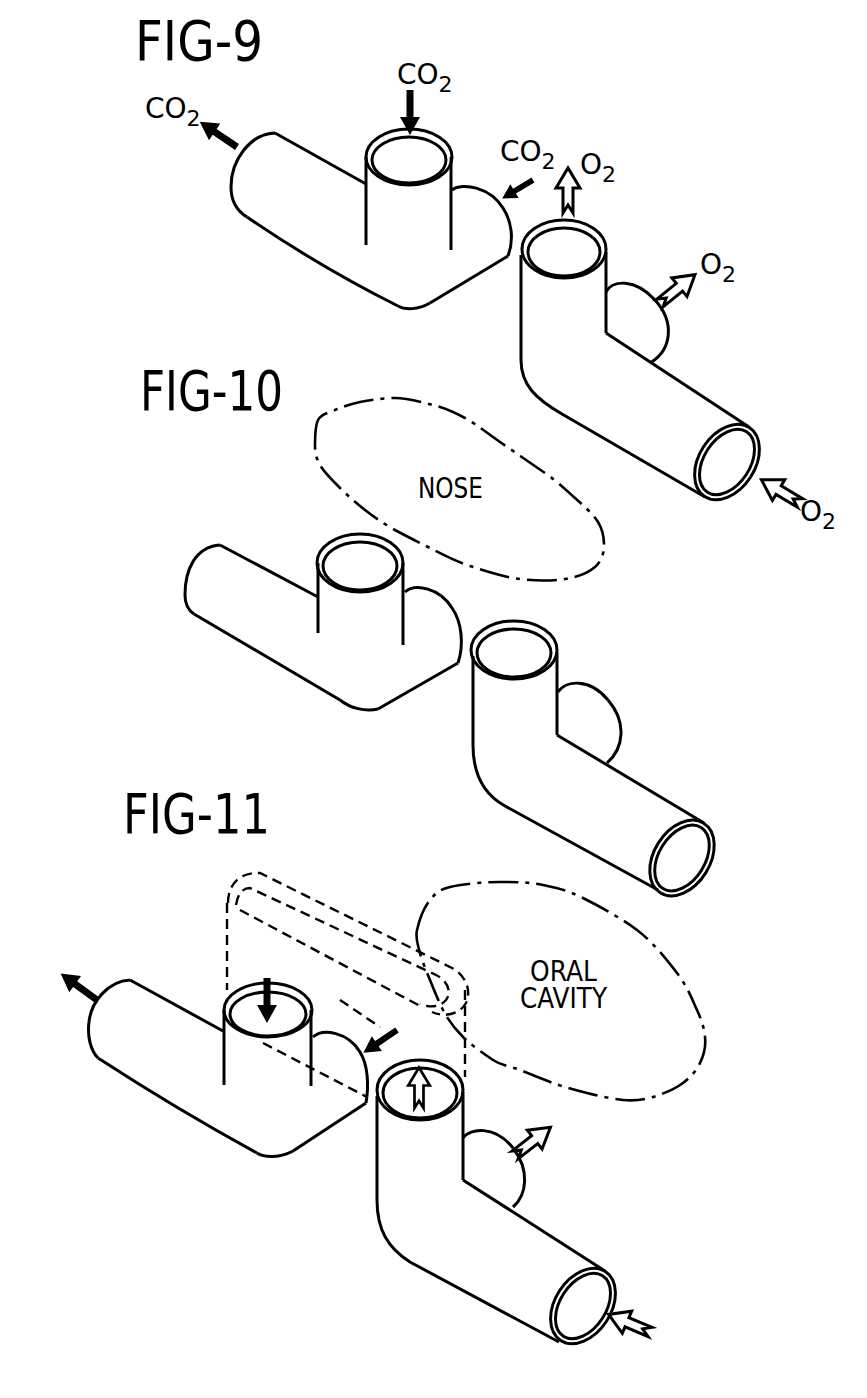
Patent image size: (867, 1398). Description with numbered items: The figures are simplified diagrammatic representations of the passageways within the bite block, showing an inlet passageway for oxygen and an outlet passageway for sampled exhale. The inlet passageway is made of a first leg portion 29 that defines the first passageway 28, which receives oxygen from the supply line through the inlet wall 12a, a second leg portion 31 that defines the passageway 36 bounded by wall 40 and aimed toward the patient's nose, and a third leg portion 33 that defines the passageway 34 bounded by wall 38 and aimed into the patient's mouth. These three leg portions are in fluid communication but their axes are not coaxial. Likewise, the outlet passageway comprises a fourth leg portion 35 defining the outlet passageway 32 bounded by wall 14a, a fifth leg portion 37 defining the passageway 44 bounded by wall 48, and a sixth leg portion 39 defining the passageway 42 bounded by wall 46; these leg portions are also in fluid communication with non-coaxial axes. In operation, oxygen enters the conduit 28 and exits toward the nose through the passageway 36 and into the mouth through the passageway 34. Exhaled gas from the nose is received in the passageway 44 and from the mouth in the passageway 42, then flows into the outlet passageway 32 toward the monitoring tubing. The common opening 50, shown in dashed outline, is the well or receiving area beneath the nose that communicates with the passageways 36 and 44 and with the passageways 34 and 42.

In FIG. 9, the inlet wall 12a is at (723, 482).
In FIG. 10, the inlet wall 12a is at (683, 877).
In FIG. 11, the inlet wall 12a is at (560, 1341).
In FIG. 9, the wall 14a is at (268, 133).
In FIG. 10, the wall 14a is at (183, 582).
In FIG. 11, the wall 14a is at (90, 1033).
In FIG. 9, the inlet passageway 28 is at (743, 447).
In FIG. 10, the inlet passageway 28 is at (697, 847).
In FIG. 11, the inlet passageway 28 is at (597, 1290).
In FIG. 9, the first leg portion 29 is at (697, 407).
In FIG. 10, the first leg portion 29 is at (637, 800).
In FIG. 11, the first leg portion 29 is at (540, 1234).
In FIG. 9, the second leg portion 31 is at (557, 303).
In FIG. 10, the second leg portion 31 is at (503, 720).
In FIG. 11, the second leg portion 31 is at (400, 1160).
In FIG. 9, the outlet passageway 32 is at (232, 176).
In FIG. 10, the outlet passageway 32 is at (194, 560).
In FIG. 11, the outlet passageway 32 is at (110, 987).
In FIG. 9, the third leg portion 33 is at (651, 344).
In FIG. 10, the third leg portion 33 is at (590, 693).
In FIG. 11, the third leg portion 33 is at (513, 1181).
In FIG. 9, the passageway 34 is at (671, 331).
In FIG. 10, the passageway 34 is at (620, 708).
In FIG. 11, the passageway 34 is at (503, 1135).
In FIG. 9, the fourth leg portion 35 is at (277, 217).
In FIG. 10, the fourth leg portion 35 is at (237, 617).
In FIG. 11, the fourth leg portion 35 is at (153, 1080).
In FIG. 9, the passageway 36 is at (583, 241).
In FIG. 10, the passageway 36 is at (533, 640).
In FIG. 11, the passageway 36 is at (443, 1075).
In FIG. 9, the fifth leg portion 37 is at (367, 188).
In FIG. 10, the fifth leg portion 37 is at (330, 593).
In FIG. 11, the fifth leg portion 37 is at (230, 1053).
In FIG. 9, the wall 38 is at (648, 287).
In FIG. 10, the wall 38 is at (627, 732).
In FIG. 11, the wall 38 is at (520, 1170).
In FIG. 9, the sixth leg portion 39 is at (473, 237).
In FIG. 10, the sixth leg portion 39 is at (433, 640).
In FIG. 11, the sixth leg portion 39 is at (343, 1107).
In FIG. 9, the wall 40 is at (572, 243).
In FIG. 10, the wall 40 is at (527, 633).
In FIG. 11, the wall 40 is at (440, 1088).
In FIG. 9, the passageway 42 is at (490, 194).
In FIG. 10, the passageway 42 is at (457, 610).
In FIG. 11, the passageway 42 is at (333, 1040).
In FIG. 9, the passageway 44 is at (390, 148).
In FIG. 10, the passageway 44 is at (347, 550).
In FIG. 11, the passageway 44 is at (243, 1013).
In FIG. 9, the wall 46 is at (507, 217).
In FIG. 10, the wall 46 is at (433, 593).
In FIG. 11, the wall 46 is at (353, 1047).
In FIG. 9, the wall 48 is at (437, 148).
In FIG. 10, the wall 48 is at (387, 560).
In FIG. 11, the wall 48 is at (283, 995).
In FIG. 11, the common opening 50 is at (369, 950).